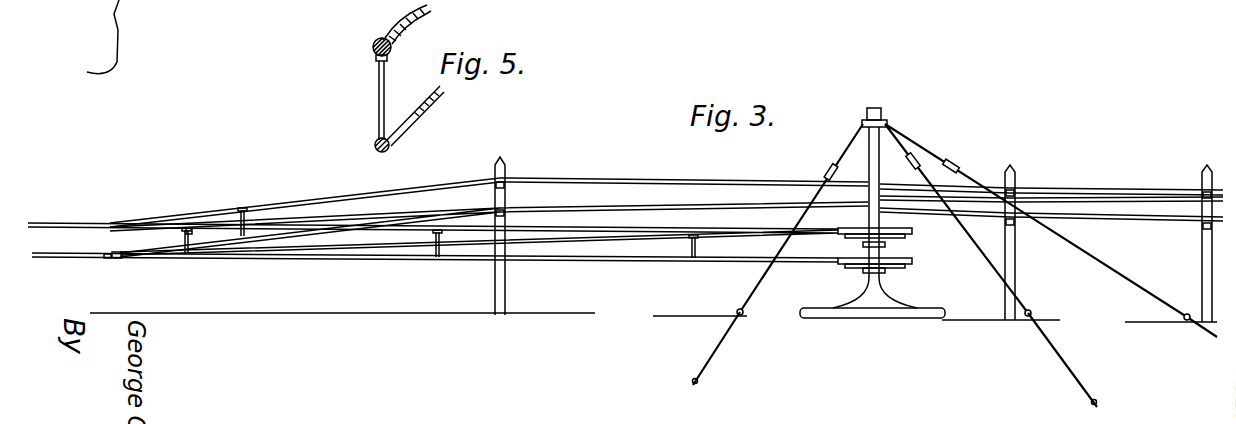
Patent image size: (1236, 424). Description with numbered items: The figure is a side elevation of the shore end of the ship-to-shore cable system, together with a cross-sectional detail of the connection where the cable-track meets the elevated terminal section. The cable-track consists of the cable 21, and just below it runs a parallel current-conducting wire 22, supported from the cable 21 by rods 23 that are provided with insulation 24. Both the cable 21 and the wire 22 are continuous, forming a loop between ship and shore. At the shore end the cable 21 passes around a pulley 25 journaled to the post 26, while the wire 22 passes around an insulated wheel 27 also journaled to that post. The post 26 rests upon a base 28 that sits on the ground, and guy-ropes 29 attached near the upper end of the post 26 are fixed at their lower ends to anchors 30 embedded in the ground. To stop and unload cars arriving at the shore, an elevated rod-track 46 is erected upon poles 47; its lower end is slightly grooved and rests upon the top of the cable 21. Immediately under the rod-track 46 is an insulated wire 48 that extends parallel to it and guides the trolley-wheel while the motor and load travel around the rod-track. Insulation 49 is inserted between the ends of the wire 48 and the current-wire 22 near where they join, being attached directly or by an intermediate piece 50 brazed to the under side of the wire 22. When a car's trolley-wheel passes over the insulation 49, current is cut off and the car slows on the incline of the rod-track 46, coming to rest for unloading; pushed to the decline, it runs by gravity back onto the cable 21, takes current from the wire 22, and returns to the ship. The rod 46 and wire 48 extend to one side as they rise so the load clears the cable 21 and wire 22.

In FIG. 5, the cable 21 is at (372, 56).
In FIG. 3, the cable 21 is at (92, 224).
In FIG. 5, the current-conducting wire 22 is at (373, 149).
In FIG. 3, the current-conducting wire 22 is at (65, 258).
In FIG. 5, the rods 23 is at (378, 100).
In FIG. 3, the rods 23 is at (181, 238).
In FIG. 5, the insulation 24 is at (388, 62).
In FIG. 3, the insulation 24 is at (190, 230).
In FIG. 3, the pulley 25 is at (908, 240).
In FIG. 3, the post 26 is at (873, 148).
In FIG. 3, the insulated wheel 27 is at (907, 260).
In FIG. 3, the base 28 is at (935, 304).
In FIG. 3, the guy-ropes 29 is at (758, 283).
In FIG. 3, the anchors 30 is at (722, 355).
In FIG. 5, the elevated rod-track 46 is at (428, 18).
In FIG. 3, the elevated rod-track 46 is at (710, 181).
In FIG. 3, the poles 47 is at (501, 306).
In FIG. 5, the insulated wire 48 is at (432, 115).
In FIG. 3, the insulated wire 48 is at (517, 210).
In FIG. 3, the insulation 49 is at (117, 256).
In FIG. 5, the intermediate piece 50 is at (382, 3).
In FIG. 3, the intermediate piece 50 is at (108, 258).